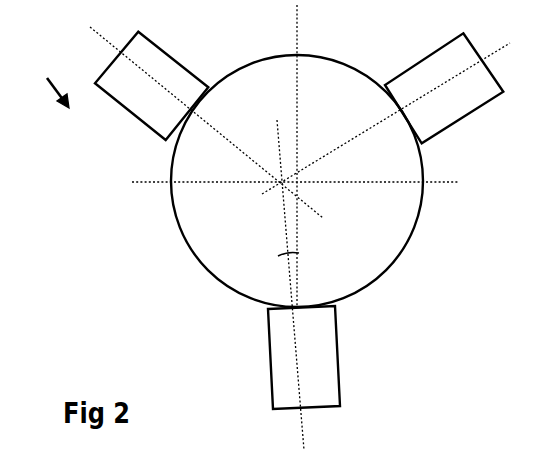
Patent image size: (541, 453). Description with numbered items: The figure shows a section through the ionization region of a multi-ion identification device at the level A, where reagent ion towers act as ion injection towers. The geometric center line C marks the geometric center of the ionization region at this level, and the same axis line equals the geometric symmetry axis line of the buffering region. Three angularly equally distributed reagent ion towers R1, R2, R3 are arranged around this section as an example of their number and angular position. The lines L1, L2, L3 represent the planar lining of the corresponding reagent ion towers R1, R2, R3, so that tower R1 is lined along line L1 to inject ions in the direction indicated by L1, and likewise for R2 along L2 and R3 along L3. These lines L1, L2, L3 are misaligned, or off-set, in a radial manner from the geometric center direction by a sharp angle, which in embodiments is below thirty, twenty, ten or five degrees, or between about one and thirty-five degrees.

The level A is at (41, 74).
The geometric center line C is at (295, 155).
The line L1 is at (199, 122).
The reagent ion tower R1 is at (151, 86).
The line L2 is at (386, 108).
The reagent ion tower R2 is at (444, 88).
The line L3 is at (304, 285).
The reagent ion tower R3 is at (304, 357).